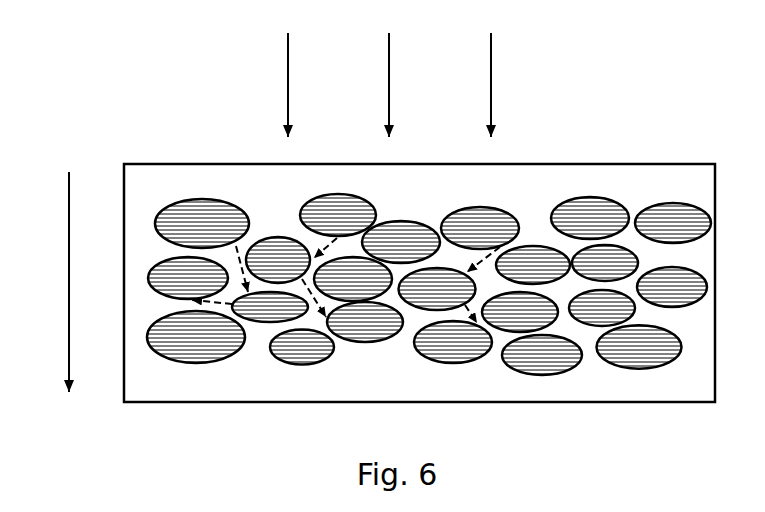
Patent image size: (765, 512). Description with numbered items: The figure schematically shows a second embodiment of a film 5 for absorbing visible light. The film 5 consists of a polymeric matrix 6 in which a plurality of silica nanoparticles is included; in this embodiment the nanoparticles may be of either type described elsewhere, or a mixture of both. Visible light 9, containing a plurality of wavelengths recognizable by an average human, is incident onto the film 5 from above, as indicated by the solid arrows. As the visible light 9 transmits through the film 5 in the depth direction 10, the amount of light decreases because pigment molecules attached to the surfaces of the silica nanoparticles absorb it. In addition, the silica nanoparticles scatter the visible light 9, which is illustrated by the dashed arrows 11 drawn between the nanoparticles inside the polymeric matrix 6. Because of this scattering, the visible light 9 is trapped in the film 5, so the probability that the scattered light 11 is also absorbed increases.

The film for absorbing visible light 5 is at (138, 125).
The polymeric matrix 6 is at (242, 378).
The visible light 9 is at (389, 85).
The depth direction 10 is at (53, 282).
The dashed arrows 11 is at (238, 243).